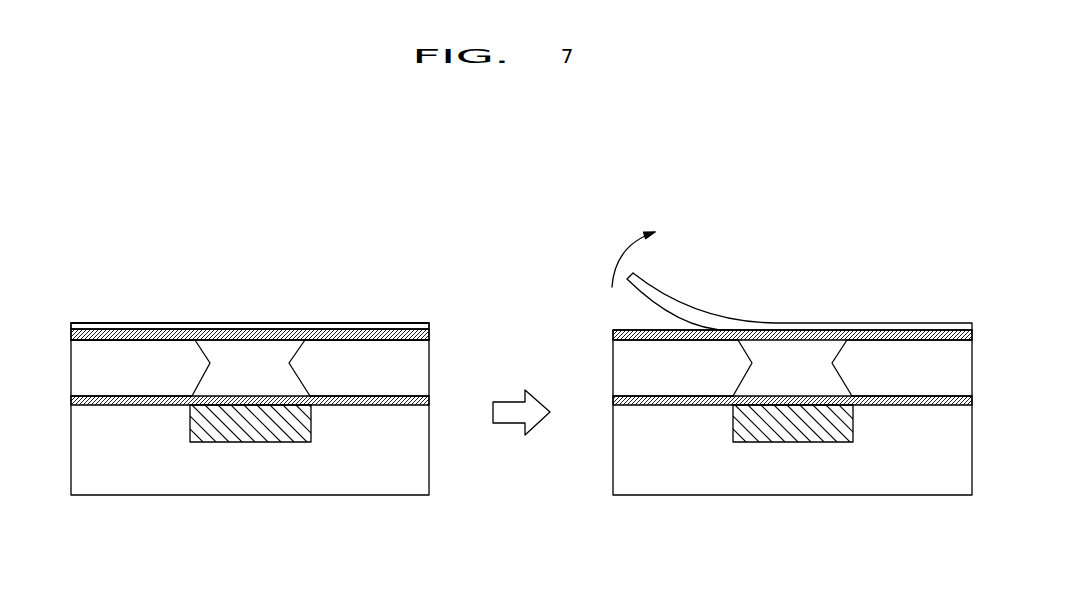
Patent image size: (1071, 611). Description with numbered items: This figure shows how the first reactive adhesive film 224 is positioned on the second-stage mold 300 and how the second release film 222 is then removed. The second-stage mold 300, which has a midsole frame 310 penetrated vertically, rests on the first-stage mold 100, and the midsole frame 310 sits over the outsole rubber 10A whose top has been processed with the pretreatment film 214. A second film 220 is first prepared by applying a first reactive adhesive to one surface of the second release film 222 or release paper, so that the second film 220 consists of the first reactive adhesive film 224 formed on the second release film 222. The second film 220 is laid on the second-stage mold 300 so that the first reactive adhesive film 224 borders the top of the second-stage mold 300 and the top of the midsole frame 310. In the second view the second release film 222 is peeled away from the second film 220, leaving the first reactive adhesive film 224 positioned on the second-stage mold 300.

The first-stage mold 100 is at (388, 496).
The outsole rubber 10A is at (283, 432).
The pretreatment film 214 is at (133, 406).
The second film 220 is at (366, 318).
The second release film 222 is at (155, 327).
The first reactive adhesive film 224 is at (100, 340).
The second-stage mold 300 is at (431, 357).
The midsole frame 310 is at (255, 358).